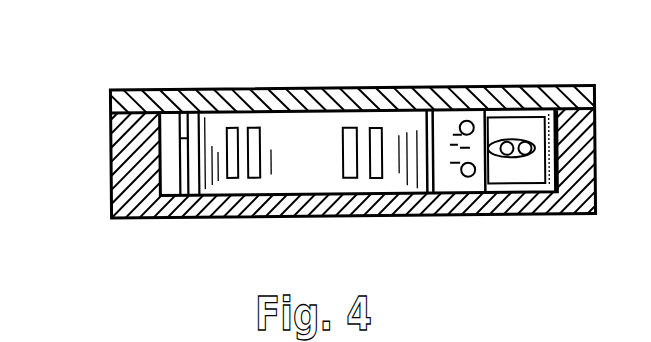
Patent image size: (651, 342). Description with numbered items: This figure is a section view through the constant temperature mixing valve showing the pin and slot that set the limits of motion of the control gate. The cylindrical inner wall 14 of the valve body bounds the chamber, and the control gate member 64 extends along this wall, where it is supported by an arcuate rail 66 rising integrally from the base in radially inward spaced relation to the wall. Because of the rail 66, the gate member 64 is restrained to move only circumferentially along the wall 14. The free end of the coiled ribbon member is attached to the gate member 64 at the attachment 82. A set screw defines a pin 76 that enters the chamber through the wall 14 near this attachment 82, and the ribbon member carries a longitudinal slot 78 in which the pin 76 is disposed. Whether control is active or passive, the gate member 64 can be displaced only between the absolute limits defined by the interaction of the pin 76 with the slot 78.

The cylindrical inner wall 14 is at (160, 168).
The control gate member 64 is at (183, 154).
The arcuate rail 66 is at (181, 139).
The attachment 82 is at (469, 127).
The pin 76 is at (520, 144).
The longitudinal slot 78 is at (533, 146).